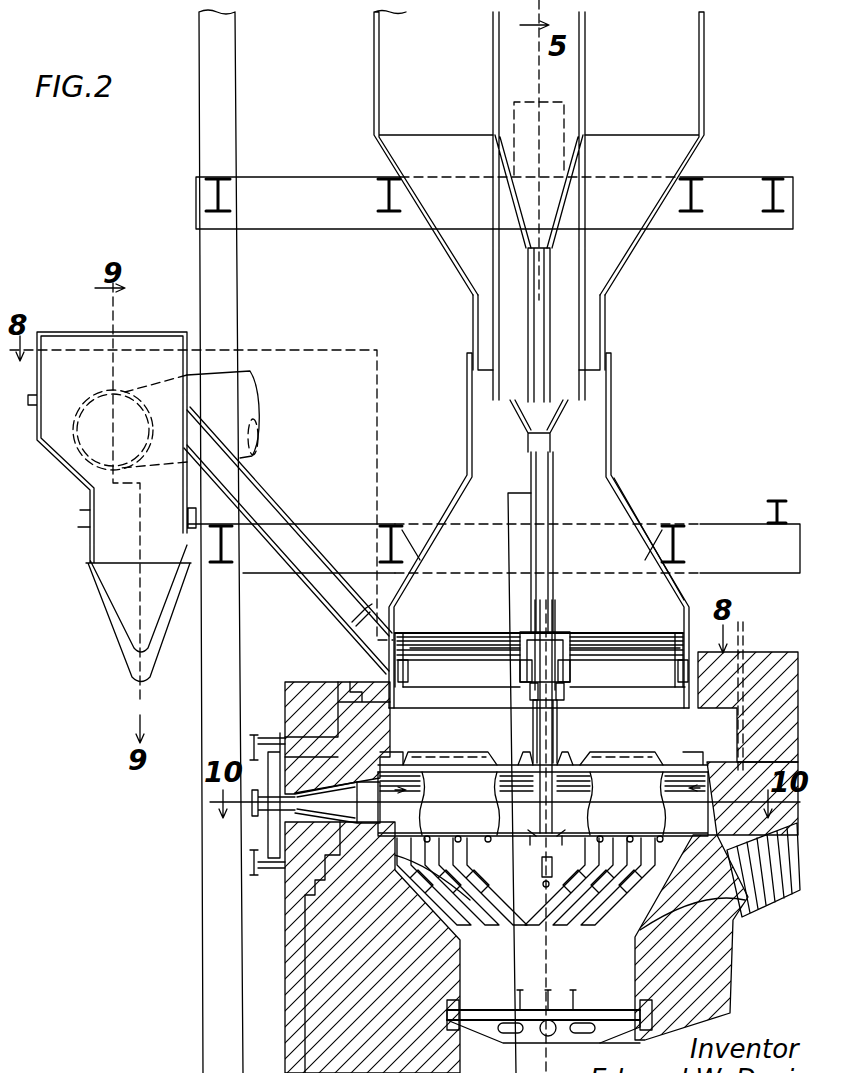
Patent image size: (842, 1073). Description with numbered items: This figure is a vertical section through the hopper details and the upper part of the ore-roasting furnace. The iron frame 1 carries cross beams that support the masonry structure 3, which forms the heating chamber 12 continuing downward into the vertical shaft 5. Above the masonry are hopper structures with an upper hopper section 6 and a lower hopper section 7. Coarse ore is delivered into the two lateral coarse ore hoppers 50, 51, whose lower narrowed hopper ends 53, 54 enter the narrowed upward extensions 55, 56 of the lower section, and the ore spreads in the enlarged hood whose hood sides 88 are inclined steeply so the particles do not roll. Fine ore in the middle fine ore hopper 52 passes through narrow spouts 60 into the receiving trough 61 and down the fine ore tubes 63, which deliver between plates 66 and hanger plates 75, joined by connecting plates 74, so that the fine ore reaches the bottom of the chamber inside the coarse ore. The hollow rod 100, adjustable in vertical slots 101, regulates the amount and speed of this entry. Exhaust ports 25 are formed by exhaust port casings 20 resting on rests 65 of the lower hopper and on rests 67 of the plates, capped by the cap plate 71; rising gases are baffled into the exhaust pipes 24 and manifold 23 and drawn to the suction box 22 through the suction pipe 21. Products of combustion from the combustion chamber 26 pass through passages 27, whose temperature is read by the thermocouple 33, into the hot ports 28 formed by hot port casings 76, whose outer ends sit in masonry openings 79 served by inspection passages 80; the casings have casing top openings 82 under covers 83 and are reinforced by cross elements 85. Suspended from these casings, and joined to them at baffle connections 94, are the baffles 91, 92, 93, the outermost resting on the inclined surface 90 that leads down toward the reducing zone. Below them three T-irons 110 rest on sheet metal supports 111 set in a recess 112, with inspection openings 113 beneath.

The iron frame 1 is at (200, 241).
The masonry structure 3 is at (300, 1000).
The vertical shaft 5 is at (702, 978).
The upper hopper section 6 is at (542, 153).
The lower hopper section 7 is at (541, 530).
The heating chamber 12 is at (400, 718).
The exhaust port casings 20 is at (541, 632).
The suction pipe 21 is at (226, 386).
The suction box 22 is at (90, 332).
The manifold 23 is at (282, 505).
The exhaust pipes 24 is at (352, 622).
The exhaust ports 25 is at (458, 650).
The combustion chamber 26 is at (645, 974).
The passages 27 is at (753, 777).
The hot ports 28 is at (394, 790).
The thermocouple 33 is at (743, 625).
The coarse ore hopper 50 is at (378, 75).
The coarse ore hopper 51 is at (704, 38).
The fine ore hopper 52 is at (493, 44).
The lower narrowed hopper end 53 is at (475, 312).
The lower narrowed hopper end 54 is at (612, 320).
The narrowed upward extension 55 is at (468, 372).
The narrowed upward extension 56 is at (612, 384).
The narrow spouts 60 is at (551, 322).
The receiving trough 61 is at (588, 418).
The fine ore tubes 63 is at (551, 549).
The rests 65 is at (408, 640).
The plates 66 is at (522, 640).
The rests 67 is at (525, 660).
The cap plate 71 is at (556, 600).
The connecting plates 74 is at (530, 692).
The hanger plates 75 is at (558, 722).
The hot port casings 76 is at (562, 820).
The masonry openings 79 is at (395, 755).
The inspection passages 80 is at (305, 812).
The casing top openings 82 is at (430, 752).
The covers 83 is at (460, 752).
The cross elements 85 is at (405, 835).
The hood sides 88 is at (640, 508).
The inclined surface 90 is at (420, 905).
The baffle 91 is at (463, 930).
The baffle 92 is at (490, 918).
The baffle 93 is at (510, 910).
The baffle connections 94 is at (445, 835).
The hollow rod 100 is at (545, 888).
The vertical slots 101 is at (553, 871).
The T-irons 110 is at (569, 992).
The sheet metal supports 111 is at (490, 1040).
The recess 112 is at (457, 1002).
The inspection openings 113 is at (561, 836).